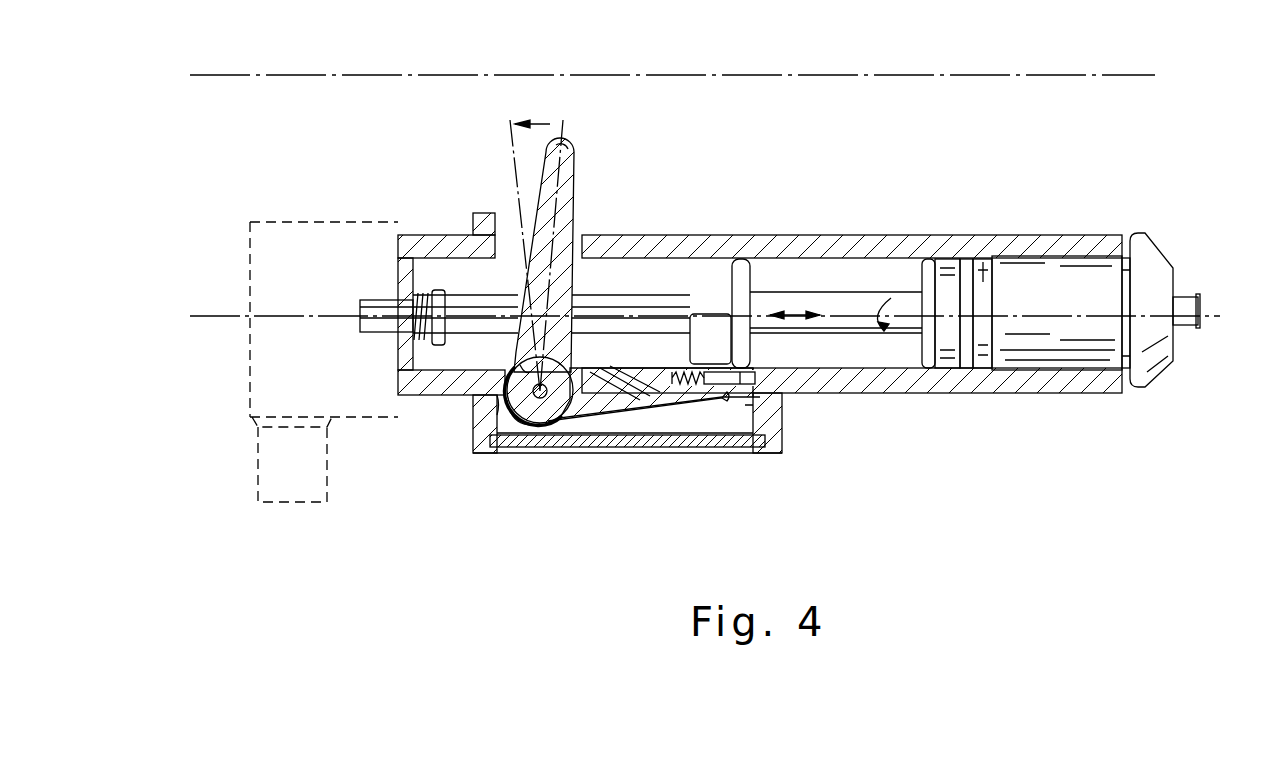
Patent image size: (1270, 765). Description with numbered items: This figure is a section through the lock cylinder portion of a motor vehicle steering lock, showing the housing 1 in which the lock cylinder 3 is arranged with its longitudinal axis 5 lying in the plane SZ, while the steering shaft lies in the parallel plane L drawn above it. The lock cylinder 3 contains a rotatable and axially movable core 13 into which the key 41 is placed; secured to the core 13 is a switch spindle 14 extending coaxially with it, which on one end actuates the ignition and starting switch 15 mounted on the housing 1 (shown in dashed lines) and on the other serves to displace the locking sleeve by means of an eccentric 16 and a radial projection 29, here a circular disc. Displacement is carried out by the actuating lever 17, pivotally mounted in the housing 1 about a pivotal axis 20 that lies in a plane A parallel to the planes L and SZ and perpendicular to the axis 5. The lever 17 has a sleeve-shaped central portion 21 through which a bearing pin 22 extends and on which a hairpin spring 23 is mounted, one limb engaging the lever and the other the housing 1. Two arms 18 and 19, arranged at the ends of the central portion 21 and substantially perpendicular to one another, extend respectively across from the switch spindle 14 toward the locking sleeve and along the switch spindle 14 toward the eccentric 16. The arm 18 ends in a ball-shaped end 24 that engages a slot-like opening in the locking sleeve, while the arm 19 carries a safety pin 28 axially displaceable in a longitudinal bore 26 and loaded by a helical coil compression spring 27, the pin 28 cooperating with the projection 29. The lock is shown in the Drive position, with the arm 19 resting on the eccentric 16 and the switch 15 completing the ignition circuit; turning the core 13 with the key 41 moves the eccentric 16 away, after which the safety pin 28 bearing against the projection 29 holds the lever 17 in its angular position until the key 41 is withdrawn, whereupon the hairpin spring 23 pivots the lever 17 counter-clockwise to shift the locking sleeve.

The housing 1 is at (918, 385).
The lock cylinder 3 is at (1078, 355).
The longitudinal axis of the lock cylinder 5 is at (1070, 316).
The core 13 is at (983, 262).
The switch spindle 14 is at (845, 305).
The ignition and starting switch 15 is at (310, 250).
The eccentric 16 is at (708, 330).
The actuating lever 17 is at (602, 414).
The arm 18 is at (572, 205).
The arm 19 is at (655, 400).
The pivotal axis 20 is at (515, 445).
The sleeve-shaped central portion 21 is at (516, 368).
The bearing pin 22 is at (522, 412).
The hairpin spring 23 is at (487, 418).
The ball-shaped end 24 is at (572, 150).
The longitudinal bore 26 is at (705, 400).
The helical coil compression spring 27 is at (708, 404).
The safety pin 28 is at (748, 406).
The radial projection 29 is at (742, 265).
The key 41 is at (1187, 300).
The longitudinal plane of the steering shaft L is at (1052, 75).
The longitudinal plane of the lock cylinder SZ is at (203, 316).
The plane of the pivotal axis A is at (587, 410).